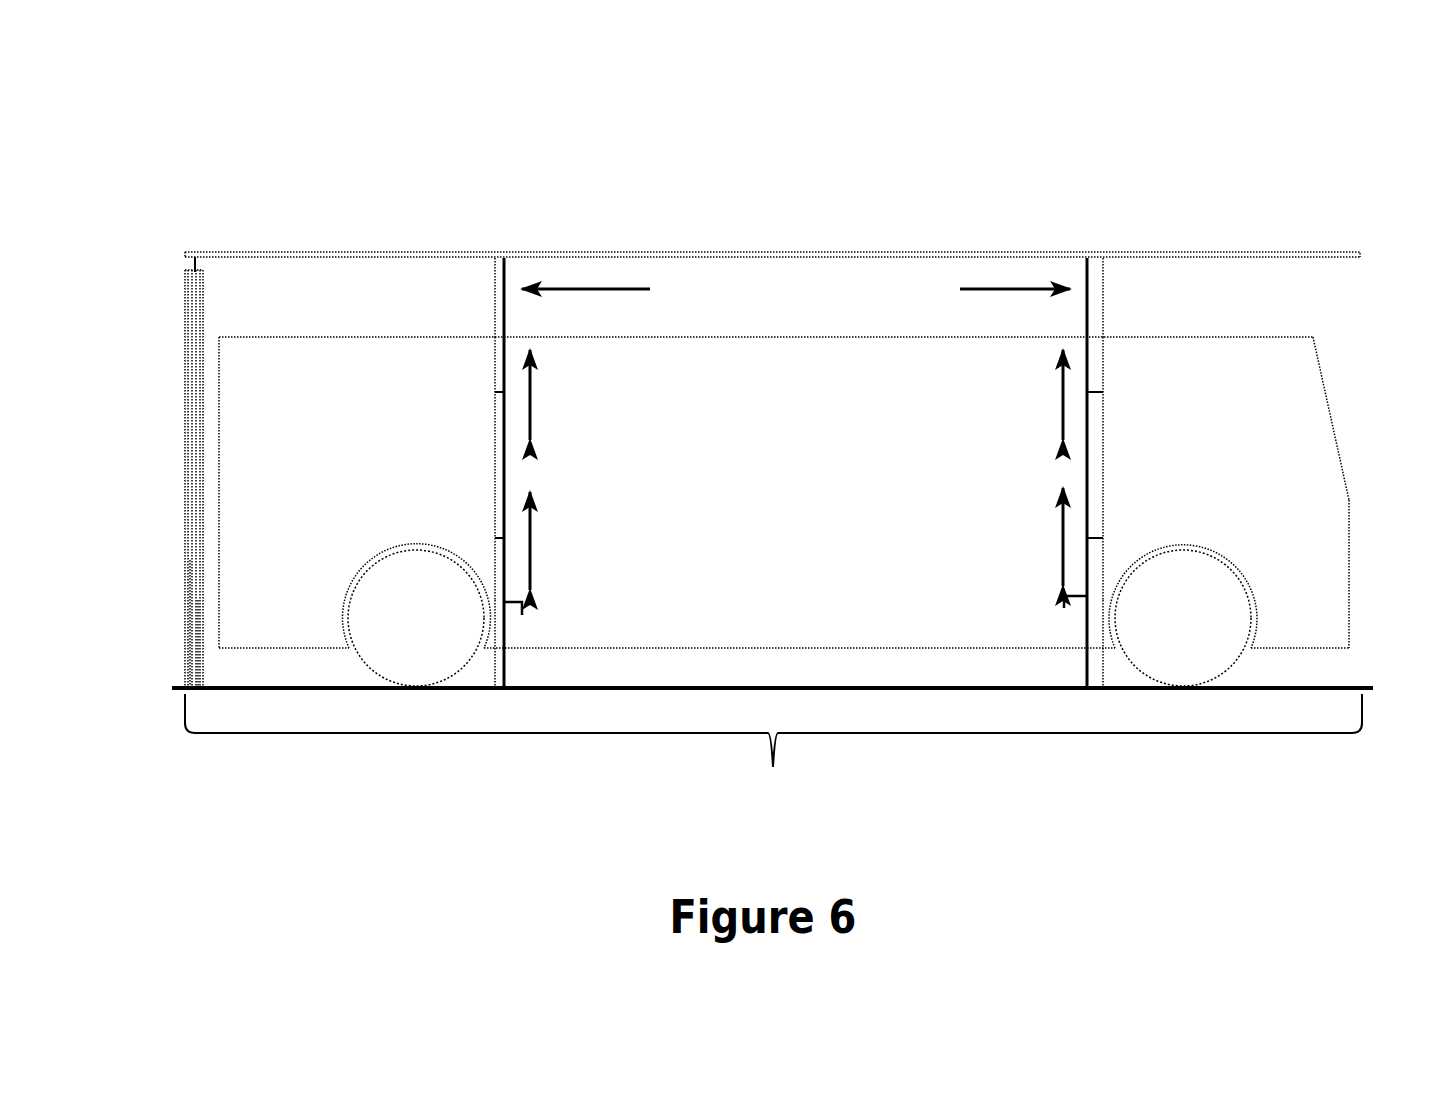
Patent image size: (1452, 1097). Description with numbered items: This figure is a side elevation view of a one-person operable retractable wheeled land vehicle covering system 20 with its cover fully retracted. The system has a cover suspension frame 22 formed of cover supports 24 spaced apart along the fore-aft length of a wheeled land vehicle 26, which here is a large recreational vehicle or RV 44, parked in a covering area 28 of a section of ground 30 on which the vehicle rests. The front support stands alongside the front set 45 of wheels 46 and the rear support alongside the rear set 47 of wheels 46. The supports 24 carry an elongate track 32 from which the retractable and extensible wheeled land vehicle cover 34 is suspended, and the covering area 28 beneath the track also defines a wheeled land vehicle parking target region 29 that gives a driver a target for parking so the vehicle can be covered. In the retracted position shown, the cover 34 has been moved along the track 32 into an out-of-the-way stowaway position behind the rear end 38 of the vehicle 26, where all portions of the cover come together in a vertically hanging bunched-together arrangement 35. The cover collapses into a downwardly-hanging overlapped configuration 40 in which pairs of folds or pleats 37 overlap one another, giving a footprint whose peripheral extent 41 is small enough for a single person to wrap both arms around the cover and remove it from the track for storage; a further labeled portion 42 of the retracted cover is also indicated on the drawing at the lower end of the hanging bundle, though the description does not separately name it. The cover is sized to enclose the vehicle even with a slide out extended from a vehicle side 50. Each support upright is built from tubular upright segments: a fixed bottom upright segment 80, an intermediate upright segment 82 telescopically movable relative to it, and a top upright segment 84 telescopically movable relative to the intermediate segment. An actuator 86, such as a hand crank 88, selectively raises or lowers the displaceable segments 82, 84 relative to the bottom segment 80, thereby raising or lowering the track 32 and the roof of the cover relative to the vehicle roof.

The retractable wheeled land vehicle covering system 20 is at (1277, 193).
The cover suspension frame 22 is at (462, 220).
The cover supports 24 is at (796, 288).
The wheeled land vehicle 26 is at (1327, 335).
The covering area 28 is at (773, 756).
The wheeled land vehicle parking target region 29 is at (823, 686).
The ground 30 is at (1353, 688).
The track 32 is at (790, 250).
The wheeled land vehicle cover 34 is at (175, 415).
The bunched-together arrangement 35 is at (180, 598).
The folds or pleats 37 is at (193, 488).
The rear end 38 is at (183, 318).
The overlapped configuration 40 is at (185, 540).
The peripheral extent 41 is at (193, 577).
The wall bottom layer 42 is at (180, 660).
The RV 44 is at (1343, 412).
The front set of wheels 45 is at (1253, 572).
The wheels 46 is at (417, 622).
The rear set of wheels 47 is at (347, 582).
The vehicle side 50 is at (830, 400).
The bottom upright segment 80 is at (492, 665).
The intermediate upright segment 82 is at (492, 465).
The top upright segment 84 is at (490, 305).
The actuator 86 is at (547, 592).
The hand crank 88 is at (527, 613).